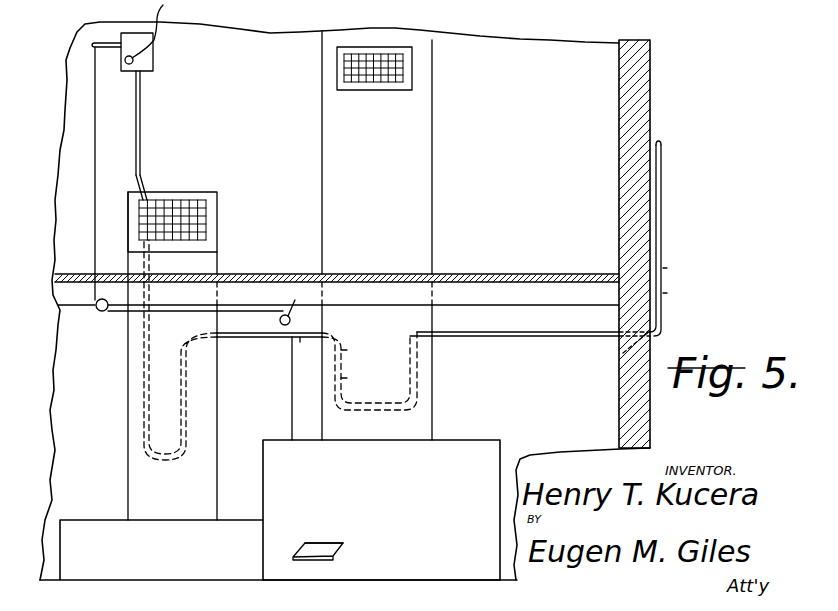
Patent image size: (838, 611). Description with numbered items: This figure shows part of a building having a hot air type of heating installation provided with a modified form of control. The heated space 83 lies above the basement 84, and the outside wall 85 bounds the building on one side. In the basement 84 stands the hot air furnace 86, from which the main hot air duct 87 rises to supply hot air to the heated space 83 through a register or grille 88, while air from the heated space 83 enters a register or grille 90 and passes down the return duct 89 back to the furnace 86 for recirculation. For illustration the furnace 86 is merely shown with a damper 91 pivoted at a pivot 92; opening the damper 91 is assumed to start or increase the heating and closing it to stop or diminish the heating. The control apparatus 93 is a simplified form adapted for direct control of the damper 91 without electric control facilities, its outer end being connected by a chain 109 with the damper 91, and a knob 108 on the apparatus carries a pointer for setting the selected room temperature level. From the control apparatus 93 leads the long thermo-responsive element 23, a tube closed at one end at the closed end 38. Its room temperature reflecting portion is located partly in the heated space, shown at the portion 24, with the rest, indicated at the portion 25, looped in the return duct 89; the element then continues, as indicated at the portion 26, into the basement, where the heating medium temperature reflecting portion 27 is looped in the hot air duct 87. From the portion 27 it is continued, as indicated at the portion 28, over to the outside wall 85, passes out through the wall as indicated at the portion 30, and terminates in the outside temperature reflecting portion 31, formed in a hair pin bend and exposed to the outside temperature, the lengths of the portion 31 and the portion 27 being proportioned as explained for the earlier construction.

The knob 108 is at (163, 5).
The control apparatus 93 is at (155, 61).
The room temperature reflecting portion 24 is at (141, 108).
The thermo-responsive element 23 is at (142, 150).
The chain 109 is at (95, 155).
The register or grille 90 is at (198, 222).
The register or grille 88 is at (407, 66).
The heated space 83 is at (525, 132).
The outside wall 85 is at (647, 80).
The closed end of tube 38 is at (658, 140).
The outside temperature reflecting portion 31 is at (662, 211).
The main hot air duct 87 is at (428, 255).
The room temperature reflecting portion 25 is at (143, 350).
The portion of thermo-responsive element 26 is at (252, 338).
The heating medium temperature reflecting portion 27 is at (418, 380).
The portion of thermo-responsive element 28 is at (533, 339).
The portion of thermo-responsive element 30 is at (622, 356).
The return duct 89 is at (128, 390).
The hot air furnace 86 is at (457, 481).
The pivot 92 is at (328, 543).
The damper 91 is at (333, 556).
The basement 84 is at (544, 409).